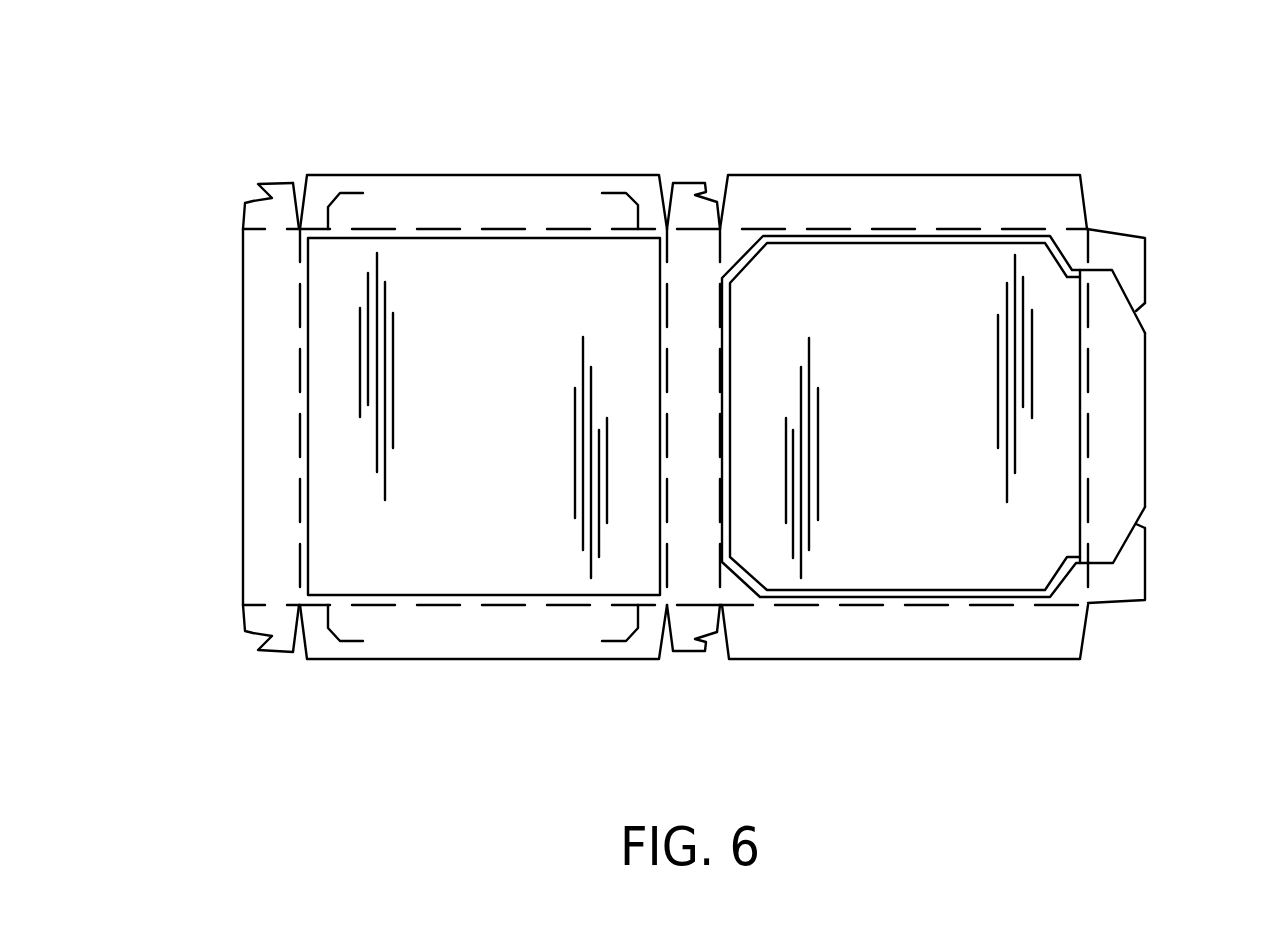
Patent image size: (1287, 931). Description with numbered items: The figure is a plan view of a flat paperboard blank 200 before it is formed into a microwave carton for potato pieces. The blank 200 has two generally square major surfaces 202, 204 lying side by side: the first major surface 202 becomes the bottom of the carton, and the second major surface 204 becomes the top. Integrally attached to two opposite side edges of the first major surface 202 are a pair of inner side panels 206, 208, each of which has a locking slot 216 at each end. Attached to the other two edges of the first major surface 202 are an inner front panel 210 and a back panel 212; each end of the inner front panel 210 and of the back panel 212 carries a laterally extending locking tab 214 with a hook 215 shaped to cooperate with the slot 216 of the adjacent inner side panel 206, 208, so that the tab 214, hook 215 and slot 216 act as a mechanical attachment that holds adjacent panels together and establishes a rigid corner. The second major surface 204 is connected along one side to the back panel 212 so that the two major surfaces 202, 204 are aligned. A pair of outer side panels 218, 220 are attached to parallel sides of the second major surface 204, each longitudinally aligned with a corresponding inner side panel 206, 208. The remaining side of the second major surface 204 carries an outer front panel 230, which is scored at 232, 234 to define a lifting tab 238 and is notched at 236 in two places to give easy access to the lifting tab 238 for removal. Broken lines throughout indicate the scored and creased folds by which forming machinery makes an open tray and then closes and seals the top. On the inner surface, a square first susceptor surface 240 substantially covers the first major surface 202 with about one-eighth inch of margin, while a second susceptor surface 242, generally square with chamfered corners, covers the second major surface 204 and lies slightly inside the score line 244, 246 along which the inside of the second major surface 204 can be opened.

The paperboard blank 200 is at (522, 173).
The first major surface 202 is at (505, 600).
The second major surface 204 is at (877, 600).
The inner side panel 206 is at (447, 194).
The inner side panel 208 is at (408, 642).
The inner front panel 210 is at (262, 471).
The back panel 212 is at (687, 580).
The locking tab 214 is at (277, 213).
The hook 215 is at (268, 198).
The locking slot 216 is at (348, 194).
The outer side panel 218 is at (900, 194).
The outer side panel 220 is at (966, 643).
The outer front panel 230 is at (1147, 428).
The score line 232 is at (1122, 283).
The score line 234 is at (1125, 547).
The notch 236 is at (1136, 311).
The lifting tab 238 is at (1096, 432).
The first susceptor surface 240 is at (464, 432).
The second susceptor surface 242 is at (886, 432).
The score line 244 is at (1025, 600).
The score line 246 is at (1063, 250).